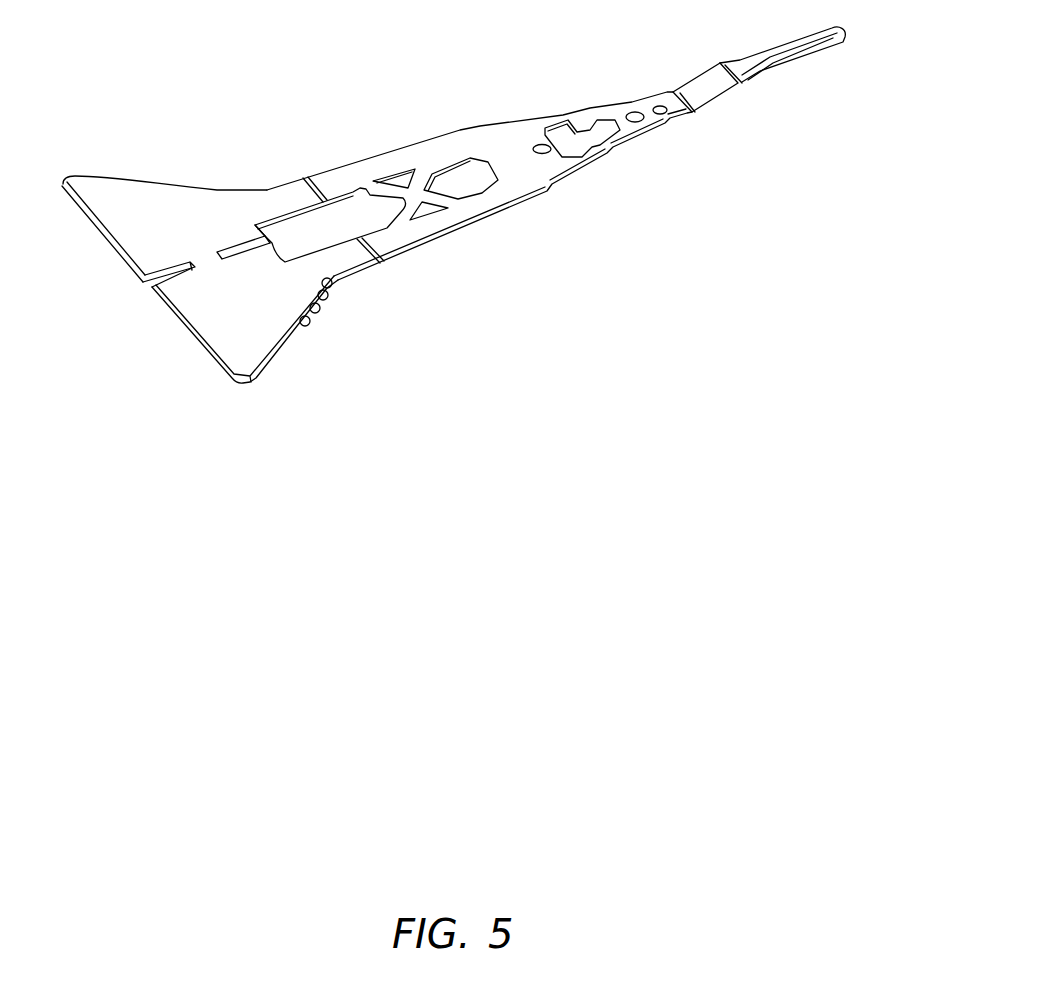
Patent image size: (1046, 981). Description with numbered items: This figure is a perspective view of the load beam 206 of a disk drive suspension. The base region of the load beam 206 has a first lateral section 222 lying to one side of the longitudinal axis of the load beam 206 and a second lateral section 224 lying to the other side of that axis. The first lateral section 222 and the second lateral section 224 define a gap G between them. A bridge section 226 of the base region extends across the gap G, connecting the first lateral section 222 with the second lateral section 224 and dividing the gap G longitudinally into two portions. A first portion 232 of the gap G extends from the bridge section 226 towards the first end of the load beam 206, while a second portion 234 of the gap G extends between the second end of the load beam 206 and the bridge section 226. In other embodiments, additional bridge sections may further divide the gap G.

The load beam 206 is at (508, 98).
The first lateral section 222 is at (283, 355).
The second lateral section 224 is at (160, 179).
The bridge section 226 is at (207, 260).
The first portion of the gap 232 is at (267, 245).
The second portion of the gap 234 is at (175, 278).
The gap G is at (141, 287).